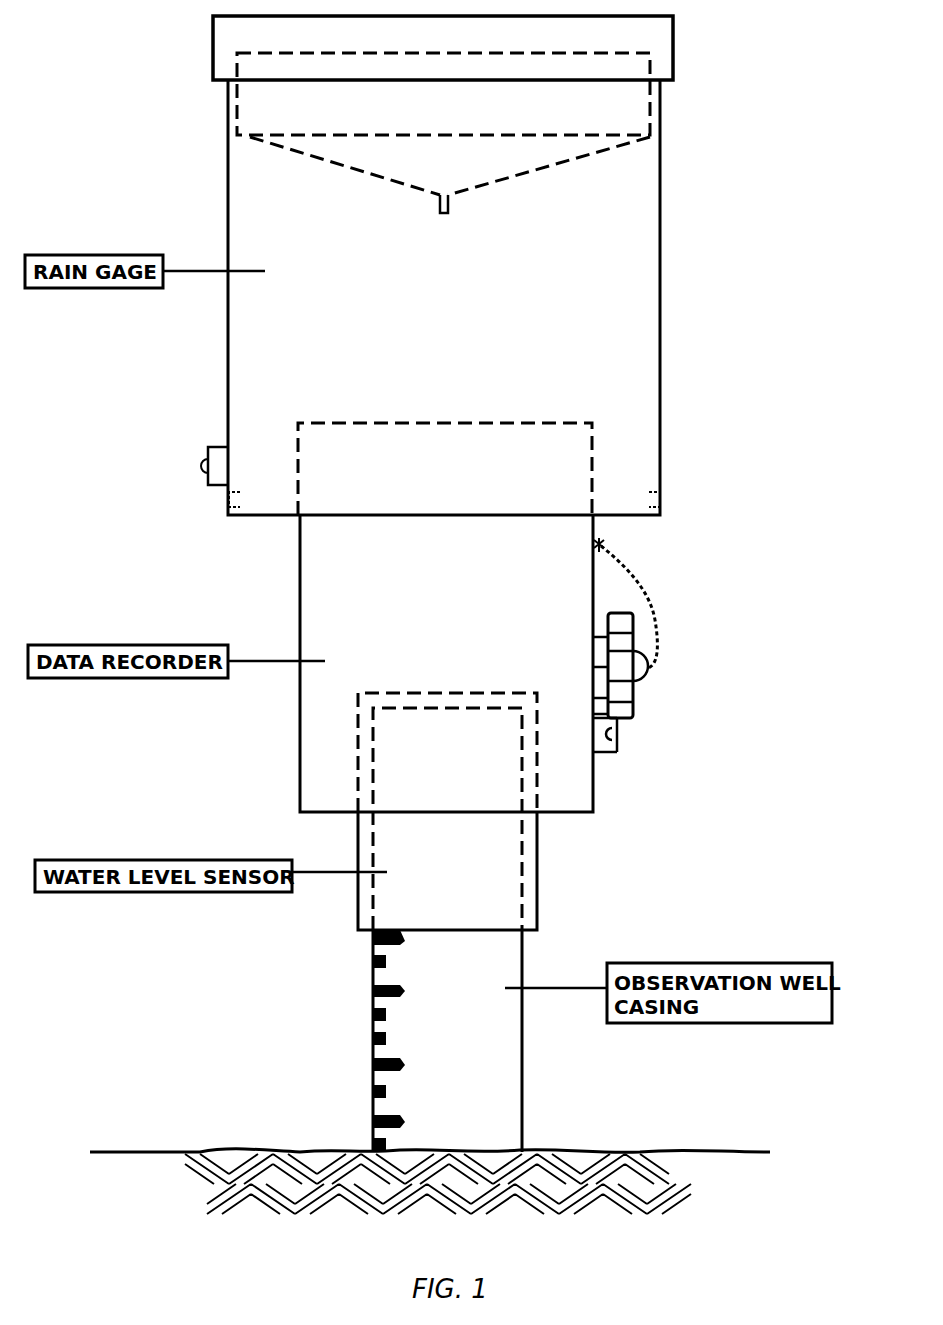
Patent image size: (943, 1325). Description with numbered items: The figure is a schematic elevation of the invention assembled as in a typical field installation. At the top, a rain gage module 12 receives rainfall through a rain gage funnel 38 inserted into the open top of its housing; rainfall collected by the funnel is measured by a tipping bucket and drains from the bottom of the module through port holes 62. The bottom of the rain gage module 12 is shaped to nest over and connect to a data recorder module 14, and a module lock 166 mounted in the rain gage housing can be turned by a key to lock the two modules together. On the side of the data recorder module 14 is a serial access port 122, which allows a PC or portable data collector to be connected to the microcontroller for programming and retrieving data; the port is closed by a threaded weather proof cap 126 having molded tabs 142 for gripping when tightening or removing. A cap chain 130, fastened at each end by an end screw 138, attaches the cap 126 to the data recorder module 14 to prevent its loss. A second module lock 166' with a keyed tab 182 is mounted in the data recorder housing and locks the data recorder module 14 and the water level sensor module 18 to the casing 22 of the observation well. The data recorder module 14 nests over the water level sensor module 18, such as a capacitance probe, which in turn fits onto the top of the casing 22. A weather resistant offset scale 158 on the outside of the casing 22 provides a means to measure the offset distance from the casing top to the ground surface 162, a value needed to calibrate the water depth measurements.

The rain gage module 12 is at (456, 309).
The rain gage funnel 38 is at (656, 48).
The module lock 166 is at (157, 435).
The port holes 62 is at (228, 503).
The data recorder module 14 is at (464, 609).
The end screw 138 is at (603, 541).
The cap chain 130 is at (650, 603).
The RS-232 access port 122 is at (598, 666).
The threaded weather proof cap 126 is at (625, 694).
The tabs 142 is at (623, 714).
The module lock 166' is at (712, 762).
The tab 182 is at (604, 751).
The water level sensor module 18 is at (464, 879).
The offset scale 158 is at (368, 990).
The casing 22 is at (491, 1064).
The ground surface 162 is at (430, 1181).